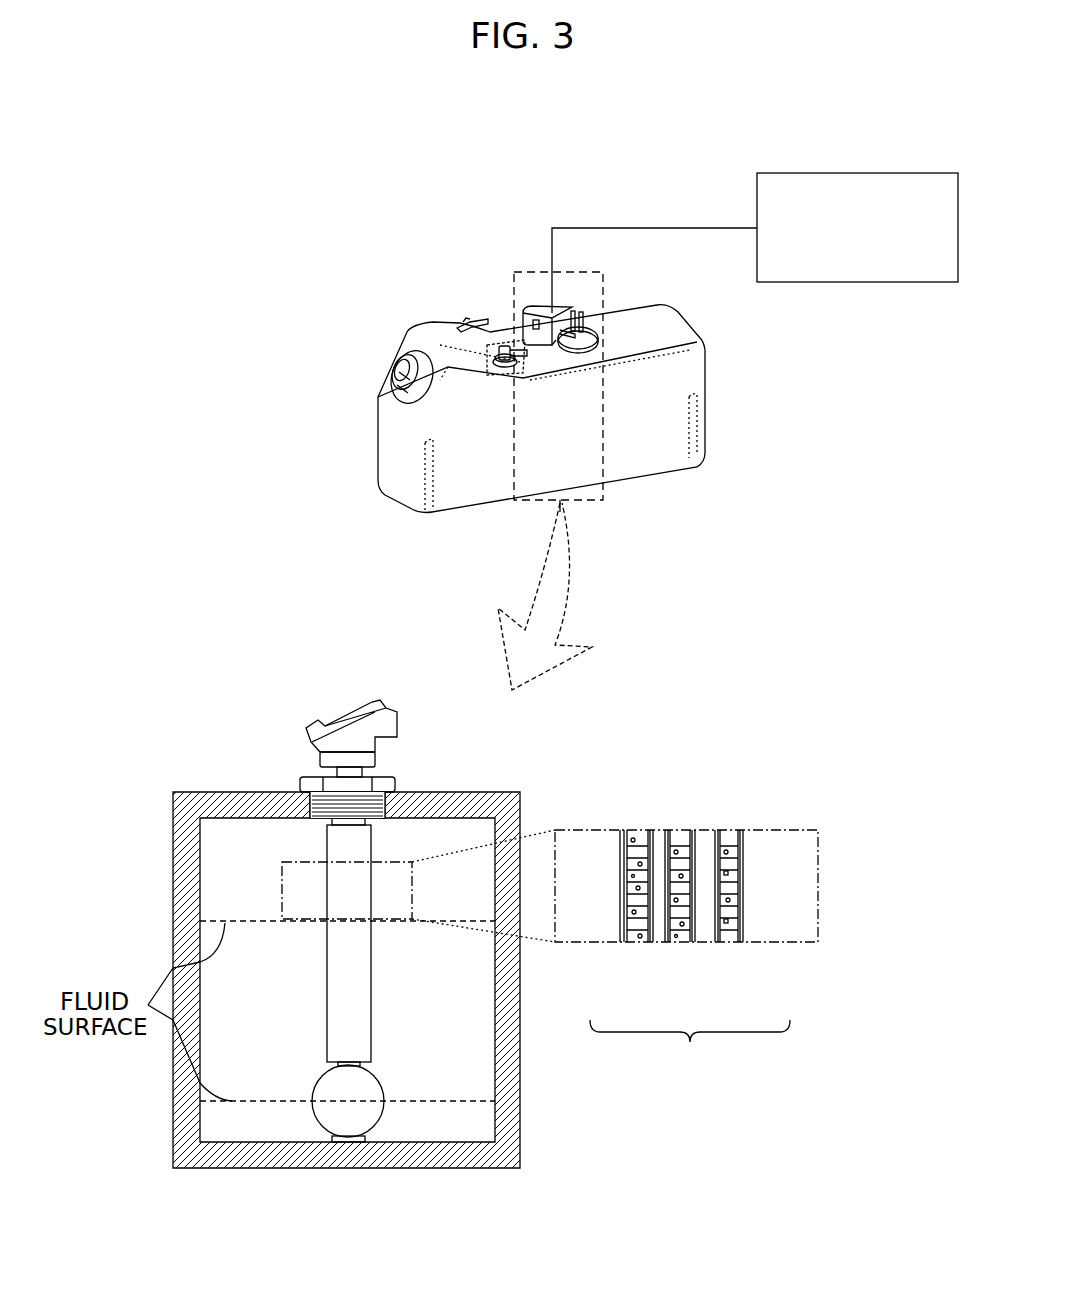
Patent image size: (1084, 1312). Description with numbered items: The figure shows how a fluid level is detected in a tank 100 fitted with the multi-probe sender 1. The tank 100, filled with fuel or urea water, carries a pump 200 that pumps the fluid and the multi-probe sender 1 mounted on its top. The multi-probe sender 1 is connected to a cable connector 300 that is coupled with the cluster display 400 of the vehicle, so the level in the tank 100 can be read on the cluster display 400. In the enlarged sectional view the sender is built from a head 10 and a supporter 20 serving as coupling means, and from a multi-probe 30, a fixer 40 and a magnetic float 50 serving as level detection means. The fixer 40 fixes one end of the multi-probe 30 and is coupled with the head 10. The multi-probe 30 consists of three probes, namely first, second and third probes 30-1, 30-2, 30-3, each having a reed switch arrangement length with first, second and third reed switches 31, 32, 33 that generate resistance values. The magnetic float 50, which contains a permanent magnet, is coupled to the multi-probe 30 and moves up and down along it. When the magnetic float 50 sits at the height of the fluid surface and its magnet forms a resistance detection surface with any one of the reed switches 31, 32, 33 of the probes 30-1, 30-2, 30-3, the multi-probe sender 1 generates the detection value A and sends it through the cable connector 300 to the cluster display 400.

The multi-probe sender 1 is at (532, 310).
The head 10 is at (393, 750).
The supporter 20 is at (384, 1087).
The multi-probe 30 is at (327, 987).
The first reed switch 31 is at (637, 830).
The second reed switch 32 is at (678, 830).
The third reed switch 33 is at (722, 830).
The first probe 30-1 is at (638, 942).
The second probe 30-2 is at (683, 942).
The third probe 30-3 is at (730, 942).
The fixer 40 is at (387, 808).
The magnetic float 50 is at (282, 878).
The tank 100 is at (672, 428).
The pump 200 is at (503, 340).
The cable connector 300 is at (700, 228).
The cluster display 400 is at (855, 173).